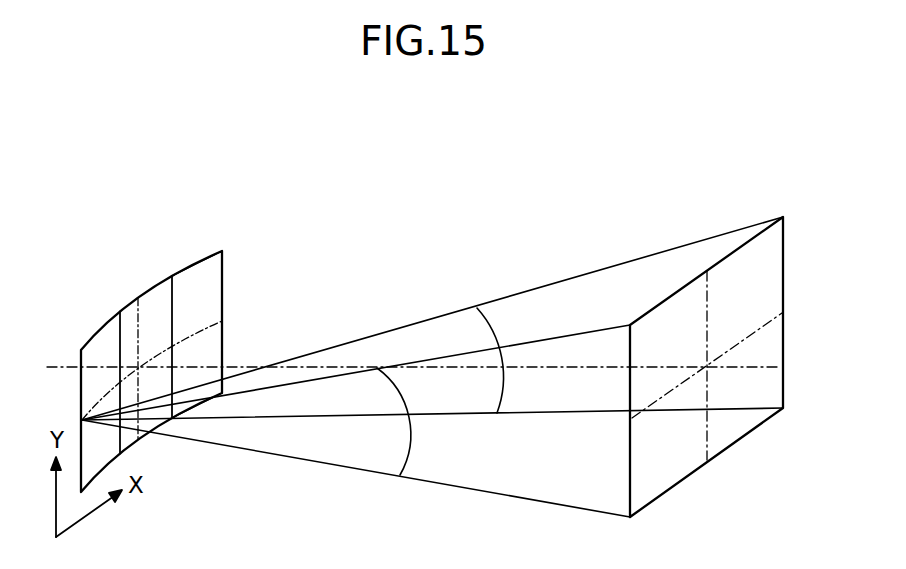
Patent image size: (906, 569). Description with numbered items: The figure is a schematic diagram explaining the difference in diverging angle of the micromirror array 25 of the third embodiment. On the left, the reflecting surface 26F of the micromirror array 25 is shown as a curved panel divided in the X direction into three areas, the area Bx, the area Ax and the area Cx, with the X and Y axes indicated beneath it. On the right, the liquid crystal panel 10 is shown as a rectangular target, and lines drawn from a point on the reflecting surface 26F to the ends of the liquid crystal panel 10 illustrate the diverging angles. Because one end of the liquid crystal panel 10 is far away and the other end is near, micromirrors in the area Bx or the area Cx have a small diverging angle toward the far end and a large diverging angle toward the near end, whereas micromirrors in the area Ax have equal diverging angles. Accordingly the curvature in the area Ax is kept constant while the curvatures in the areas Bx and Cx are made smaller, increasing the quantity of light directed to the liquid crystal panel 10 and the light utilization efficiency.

The liquid crystal panel 10 is at (785, 213).
The micromirror array 25 is at (160, 244).
The reflecting surface 26F is at (208, 299).
The area Ax is at (153, 310).
The area Bx is at (103, 347).
The area Cx is at (197, 297).